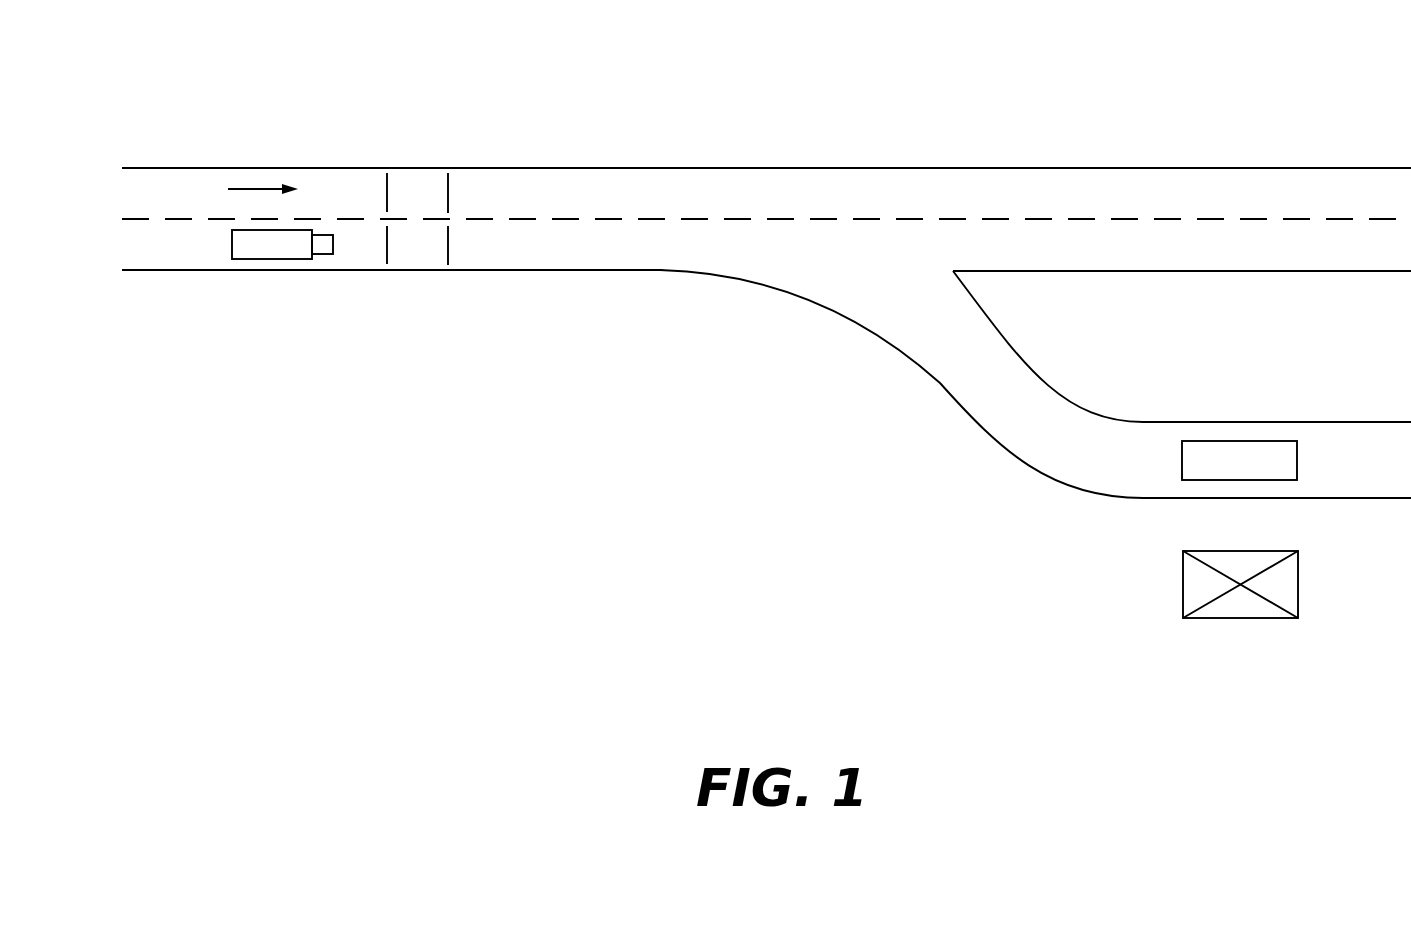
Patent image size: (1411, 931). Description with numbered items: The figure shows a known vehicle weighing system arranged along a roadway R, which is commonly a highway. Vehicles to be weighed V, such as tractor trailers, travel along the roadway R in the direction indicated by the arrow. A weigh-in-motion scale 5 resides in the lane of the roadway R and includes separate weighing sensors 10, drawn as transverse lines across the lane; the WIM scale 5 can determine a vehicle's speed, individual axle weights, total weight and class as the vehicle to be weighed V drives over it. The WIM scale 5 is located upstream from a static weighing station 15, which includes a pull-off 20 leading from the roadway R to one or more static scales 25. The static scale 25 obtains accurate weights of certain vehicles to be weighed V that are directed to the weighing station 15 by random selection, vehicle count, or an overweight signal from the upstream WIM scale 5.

The roadway R is at (978, 185).
The weigh-in-motion scale 5 is at (410, 276).
The vehicle to be weighed V is at (280, 252).
The weighing sensor 10 is at (387, 193).
The pull-off 20 is at (957, 385).
The static scale 25 is at (1233, 453).
The static weighing station 15 is at (1237, 606).